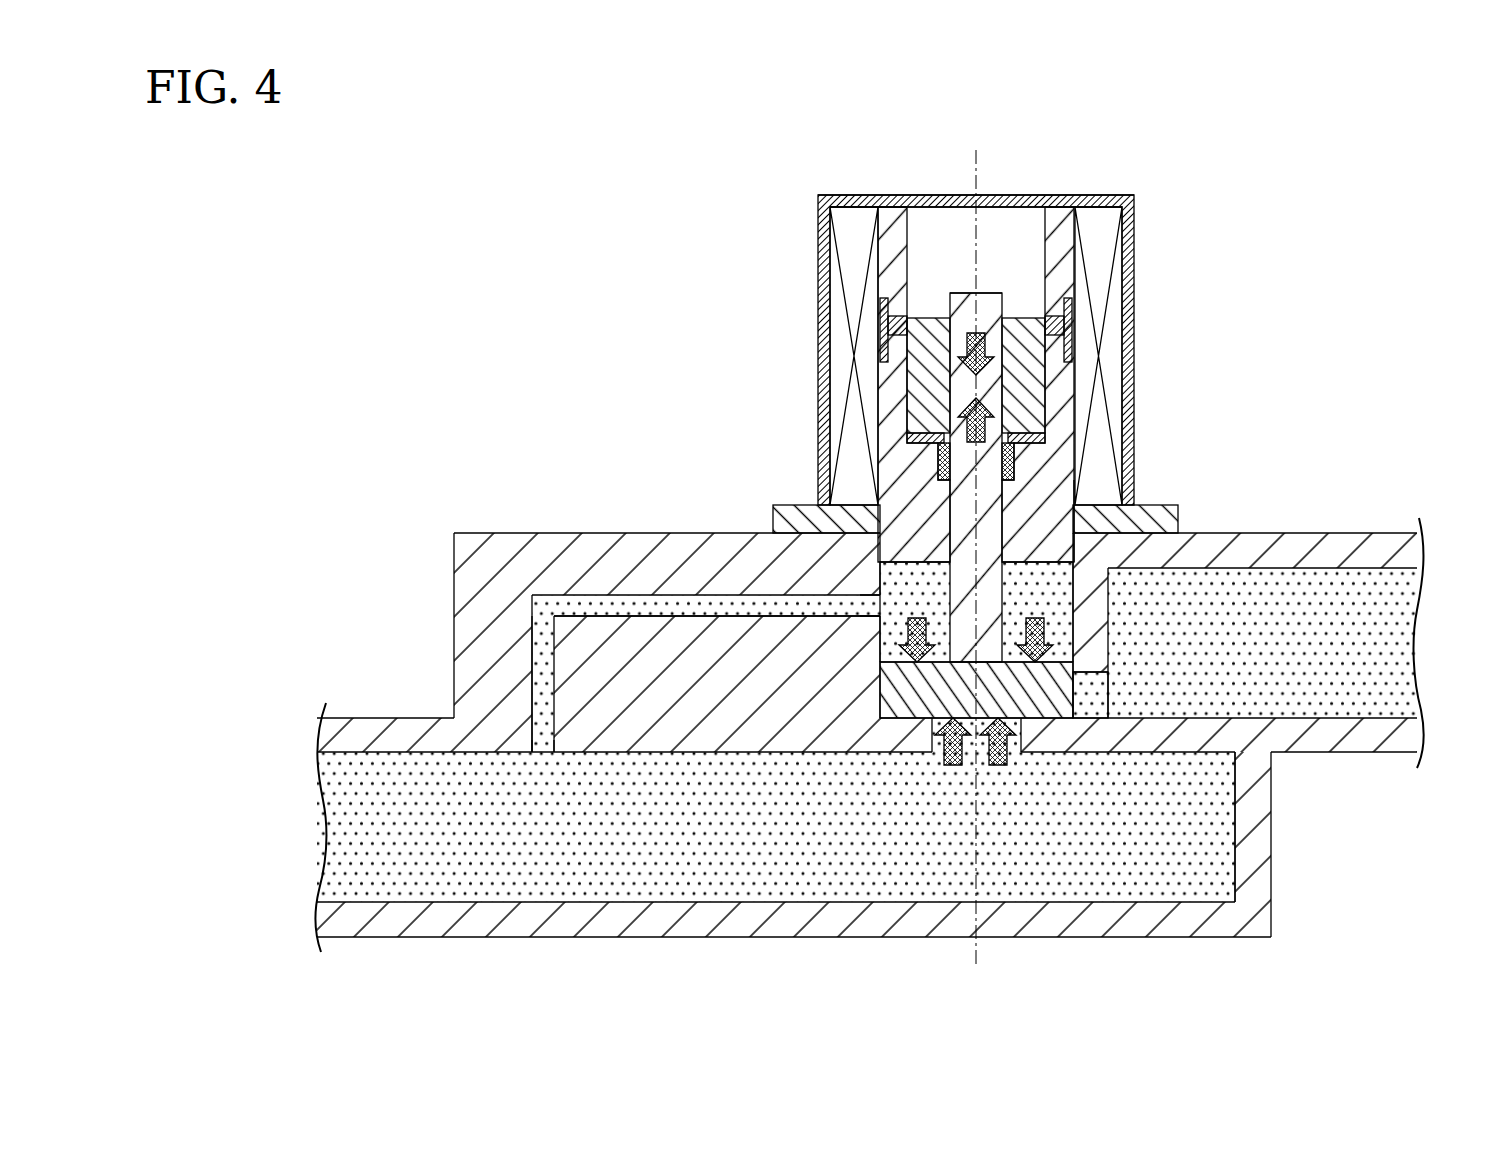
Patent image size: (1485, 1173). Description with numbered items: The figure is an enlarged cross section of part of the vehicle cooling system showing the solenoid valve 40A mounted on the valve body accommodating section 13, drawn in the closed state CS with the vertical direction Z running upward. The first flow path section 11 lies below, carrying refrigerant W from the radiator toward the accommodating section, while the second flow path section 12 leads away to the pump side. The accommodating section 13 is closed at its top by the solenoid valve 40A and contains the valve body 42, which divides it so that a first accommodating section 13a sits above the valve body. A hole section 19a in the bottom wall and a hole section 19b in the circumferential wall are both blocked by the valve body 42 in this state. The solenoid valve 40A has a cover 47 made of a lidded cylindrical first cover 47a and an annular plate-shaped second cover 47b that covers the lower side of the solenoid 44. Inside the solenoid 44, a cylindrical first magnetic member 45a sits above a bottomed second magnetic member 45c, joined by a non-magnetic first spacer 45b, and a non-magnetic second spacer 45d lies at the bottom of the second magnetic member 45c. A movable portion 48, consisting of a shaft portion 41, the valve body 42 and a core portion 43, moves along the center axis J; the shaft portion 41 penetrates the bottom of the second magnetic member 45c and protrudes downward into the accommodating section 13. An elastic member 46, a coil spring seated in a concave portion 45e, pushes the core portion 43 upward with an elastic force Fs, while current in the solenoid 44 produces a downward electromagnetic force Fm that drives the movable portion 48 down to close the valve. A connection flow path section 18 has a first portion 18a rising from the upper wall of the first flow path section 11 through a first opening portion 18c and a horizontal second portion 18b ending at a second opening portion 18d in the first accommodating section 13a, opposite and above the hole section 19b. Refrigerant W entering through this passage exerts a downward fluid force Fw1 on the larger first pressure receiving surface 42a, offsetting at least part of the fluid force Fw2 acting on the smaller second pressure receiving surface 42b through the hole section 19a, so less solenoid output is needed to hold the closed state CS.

The first flow path section 11 is at (382, 760).
The second flow path section 12 is at (1318, 580).
The valve body accommodating section 13 is at (1075, 581).
The first accommodating section 13a is at (901, 591).
The connection flow path section 18 is at (565, 446).
The first portion 18a is at (538, 670).
The second portion 18b is at (592, 602).
The first opening portion 18c is at (547, 752).
The second opening portion 18d is at (866, 607).
The hole section 19a is at (1013, 730).
The hole section 19b is at (1090, 675).
The solenoid valve 40A is at (1155, 391).
The shaft portion 41 is at (1000, 530).
The valve body 42 is at (1037, 697).
The first pressure receiving surface 42a is at (1055, 657).
The second pressure receiving surface 42b is at (940, 720).
The core portion 43 is at (1062, 403).
The solenoid 44 is at (1028, 370).
The first magnetic member 45a is at (1058, 287).
The first spacer 45b is at (1070, 333).
The second magnetic member 45c is at (1073, 483).
The second spacer 45d is at (910, 440).
The concave portion 45e is at (1013, 440).
The elastic member 46 is at (940, 473).
The cover 47 is at (968, 324).
The first cover 47a is at (1108, 198).
The second cover 47b is at (1150, 512).
The movable portion 48 is at (996, 290).
The center axis J is at (980, 178).
The electromagnetic force Fm is at (963, 342).
The elastic force Fs is at (963, 427).
The fluid force Fw1 is at (917, 650).
The fluid force Fw2 is at (997, 765).
The refrigerant W is at (1200, 858).
The vertical direction Z is at (252, 965).
The closed state CS is at (428, 334).